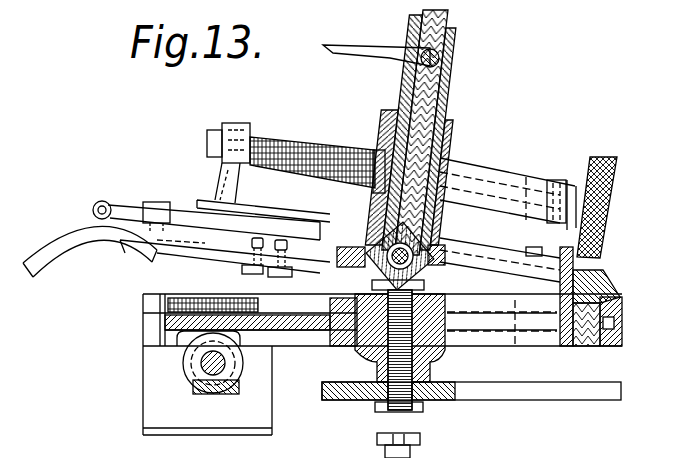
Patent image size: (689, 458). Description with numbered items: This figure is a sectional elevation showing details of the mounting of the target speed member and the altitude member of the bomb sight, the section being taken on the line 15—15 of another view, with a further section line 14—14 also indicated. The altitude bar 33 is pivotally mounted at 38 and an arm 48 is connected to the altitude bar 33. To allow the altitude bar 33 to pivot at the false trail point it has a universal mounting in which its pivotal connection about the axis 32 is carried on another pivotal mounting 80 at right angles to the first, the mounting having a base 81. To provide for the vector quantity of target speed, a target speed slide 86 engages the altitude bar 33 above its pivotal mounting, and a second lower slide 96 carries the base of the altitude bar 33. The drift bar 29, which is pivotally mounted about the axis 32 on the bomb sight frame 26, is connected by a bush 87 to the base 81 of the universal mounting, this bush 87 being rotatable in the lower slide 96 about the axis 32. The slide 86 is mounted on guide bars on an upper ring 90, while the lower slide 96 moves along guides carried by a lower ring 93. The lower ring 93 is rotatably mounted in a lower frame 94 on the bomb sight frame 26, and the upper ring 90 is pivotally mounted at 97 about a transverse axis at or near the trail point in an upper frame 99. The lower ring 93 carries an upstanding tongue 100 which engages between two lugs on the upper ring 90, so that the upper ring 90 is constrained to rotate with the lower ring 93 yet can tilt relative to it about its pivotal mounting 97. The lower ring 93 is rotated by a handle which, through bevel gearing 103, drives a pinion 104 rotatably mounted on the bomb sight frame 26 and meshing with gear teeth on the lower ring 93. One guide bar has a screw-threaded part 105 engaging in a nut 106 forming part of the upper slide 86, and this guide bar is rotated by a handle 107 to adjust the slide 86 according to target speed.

The section line 14— 14 is at (477, 13).
The section line 15— 15 is at (332, 288).
The bomb sight frame 26 is at (292, 348).
The drift bar 29 is at (518, 401).
The axis 32 is at (402, 412).
The altitude bar 33 is at (450, 68).
The pivotal mounting of altitude bar 38 is at (373, 226).
The arm 48 is at (80, 228).
The pivotal mounting 80 is at (350, 233).
The base 81 is at (448, 302).
The target speed slide 86 is at (472, 183).
The bush 87 is at (445, 338).
The upper ring 90 is at (578, 248).
The lower ring 93 is at (590, 340).
The lower frame 94 is at (611, 340).
The lower slide 96 is at (356, 346).
The pivotal mounting 97 is at (420, 450).
The upper frame 99 is at (571, 313).
The upstanding tongue 100 is at (550, 285).
The bevel gearing 103 is at (200, 390).
The pinion 104 is at (200, 298).
The screw-threaded part 105 is at (350, 150).
The nut 106 is at (371, 147).
The handle 107 is at (602, 156).